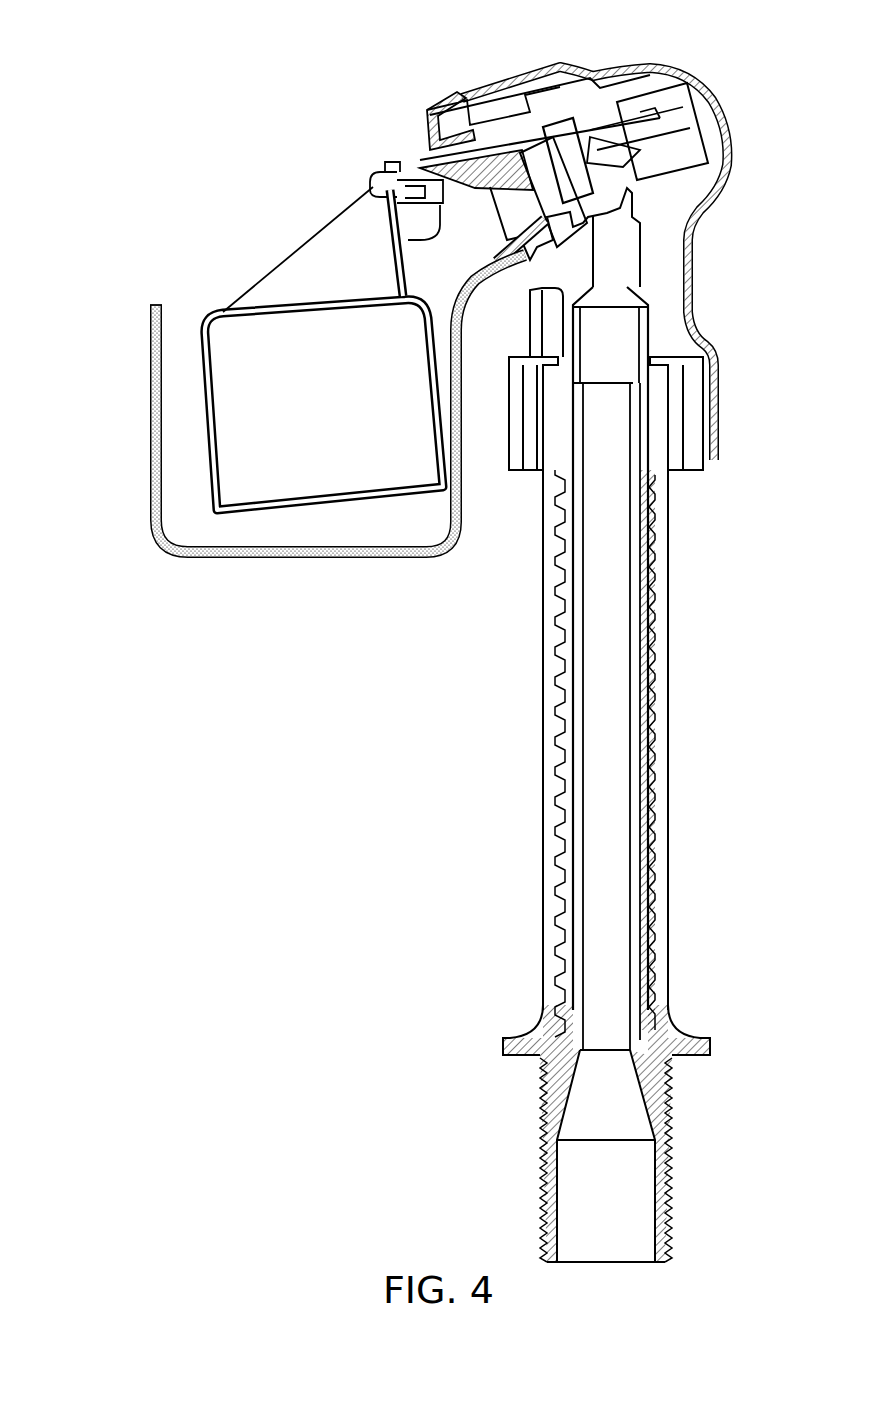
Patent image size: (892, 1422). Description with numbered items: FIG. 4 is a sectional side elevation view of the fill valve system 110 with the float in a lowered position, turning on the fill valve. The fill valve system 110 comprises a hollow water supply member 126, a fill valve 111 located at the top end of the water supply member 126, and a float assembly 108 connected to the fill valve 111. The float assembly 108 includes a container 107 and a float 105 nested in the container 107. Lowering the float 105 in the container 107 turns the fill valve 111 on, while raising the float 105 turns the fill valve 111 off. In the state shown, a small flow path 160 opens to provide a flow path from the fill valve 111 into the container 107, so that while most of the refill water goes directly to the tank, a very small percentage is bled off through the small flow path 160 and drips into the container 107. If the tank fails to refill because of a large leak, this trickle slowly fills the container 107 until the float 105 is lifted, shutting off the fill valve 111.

The float 105 is at (205, 412).
The container 107 is at (150, 447).
The float assembly 108 is at (285, 369).
The fill valve system 110 is at (755, 80).
The fill valve 111 is at (481, 60).
The water supply member 126 is at (668, 652).
The small flow path 160 is at (372, 178).